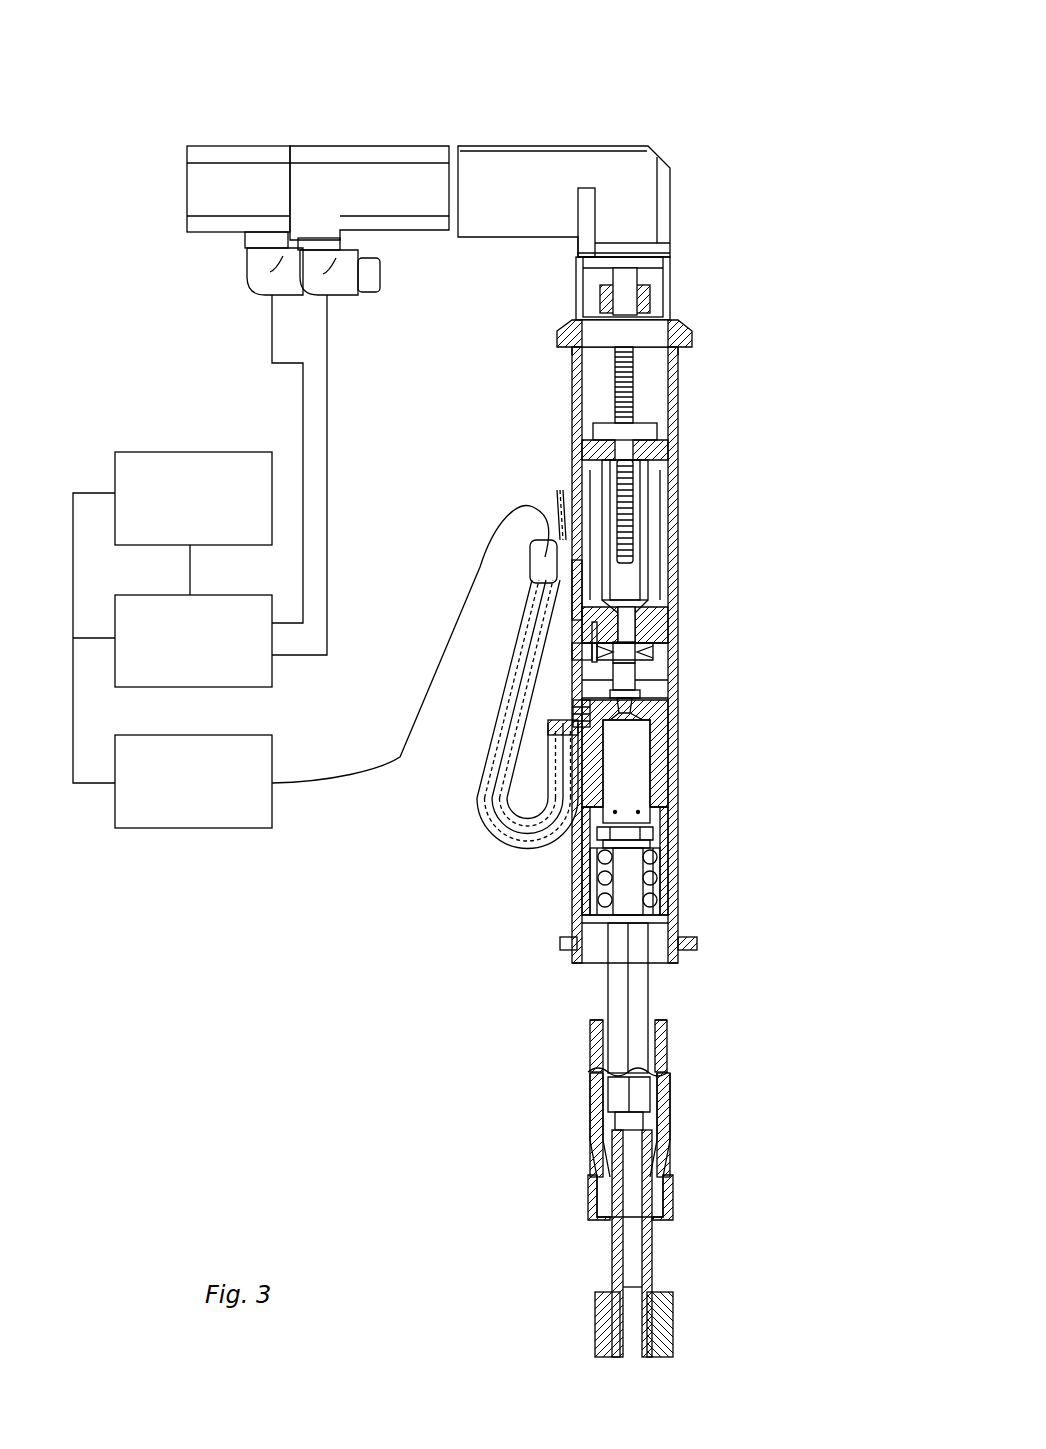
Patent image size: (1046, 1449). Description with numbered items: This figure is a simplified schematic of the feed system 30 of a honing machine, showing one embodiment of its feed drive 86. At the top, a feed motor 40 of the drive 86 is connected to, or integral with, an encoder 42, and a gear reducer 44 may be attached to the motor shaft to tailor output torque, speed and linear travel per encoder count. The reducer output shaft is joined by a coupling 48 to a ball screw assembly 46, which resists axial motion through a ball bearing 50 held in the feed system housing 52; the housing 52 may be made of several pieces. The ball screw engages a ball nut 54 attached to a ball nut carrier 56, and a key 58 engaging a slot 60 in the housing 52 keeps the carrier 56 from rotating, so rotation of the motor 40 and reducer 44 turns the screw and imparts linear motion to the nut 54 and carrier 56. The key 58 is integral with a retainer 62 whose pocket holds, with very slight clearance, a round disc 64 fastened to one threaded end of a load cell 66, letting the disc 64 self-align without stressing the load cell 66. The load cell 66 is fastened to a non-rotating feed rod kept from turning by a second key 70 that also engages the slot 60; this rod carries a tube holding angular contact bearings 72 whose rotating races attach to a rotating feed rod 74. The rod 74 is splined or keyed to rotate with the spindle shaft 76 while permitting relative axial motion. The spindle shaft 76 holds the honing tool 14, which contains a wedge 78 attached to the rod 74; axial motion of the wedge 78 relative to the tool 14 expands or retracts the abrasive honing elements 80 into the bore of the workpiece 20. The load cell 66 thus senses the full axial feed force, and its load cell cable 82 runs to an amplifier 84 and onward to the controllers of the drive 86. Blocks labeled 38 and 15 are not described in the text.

The feed system 30 is at (684, 86).
The encoder 42 is at (241, 146).
The feed motor 40 is at (376, 146).
The gear reducer 44 is at (583, 146).
The coupling 48 is at (653, 290).
The ball bearing 50 is at (673, 318).
The feed system housing 52 is at (678, 373).
The ball screw assembly 46 is at (640, 382).
The ball nut 54 is at (657, 432).
The ball nut carrier 56 is at (648, 493).
The slot 60 is at (575, 593).
The key 58 is at (573, 655).
The key 70 is at (565, 705).
The round disc 64 is at (665, 650).
The retainer 62 is at (655, 655).
The load cell 66 is at (635, 677).
The lower housing 15 is at (676, 735).
The angular contact bearings 72 is at (680, 870).
The rotating feed rod 74 is at (650, 990).
The spindle shaft 76 is at (672, 1095).
The wedge 78 is at (645, 1140).
The honing tool 14 is at (655, 1250).
The workpiece 20 is at (593, 1327).
The abrasive honing elements 80 is at (670, 1328).
The controller 38 is at (115, 452).
The feed drive 86 is at (229, 663).
The amplifier 84 is at (234, 813).
The load cell cable 82 is at (518, 505).